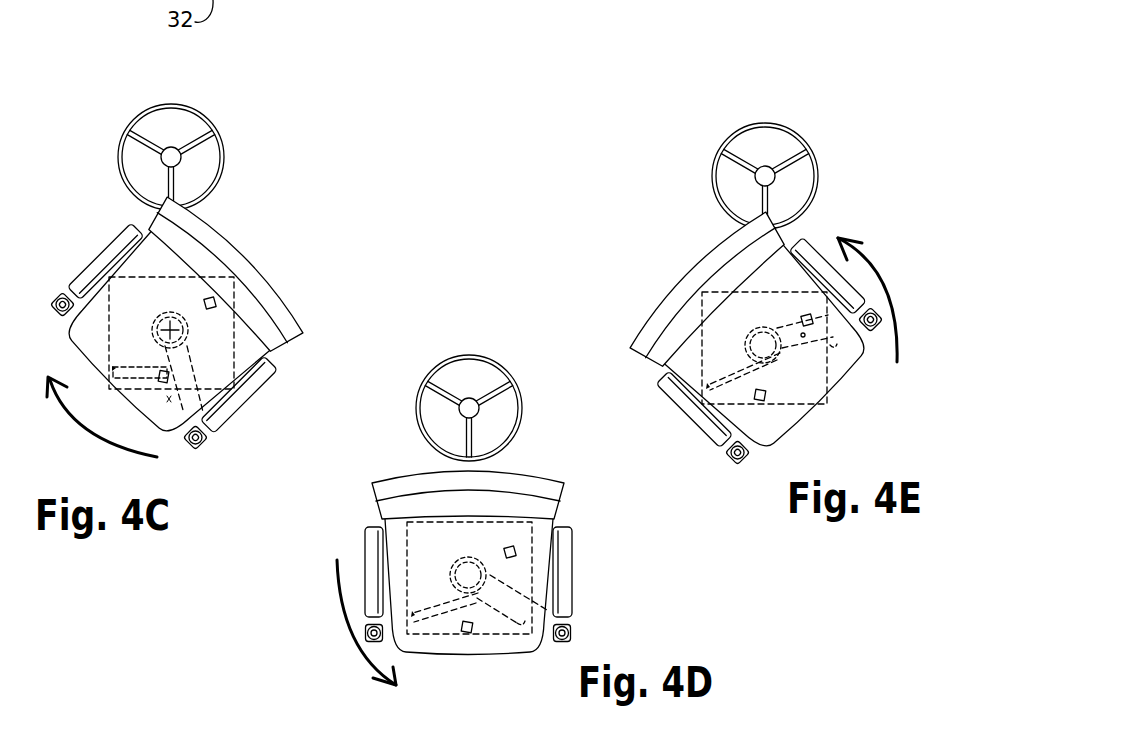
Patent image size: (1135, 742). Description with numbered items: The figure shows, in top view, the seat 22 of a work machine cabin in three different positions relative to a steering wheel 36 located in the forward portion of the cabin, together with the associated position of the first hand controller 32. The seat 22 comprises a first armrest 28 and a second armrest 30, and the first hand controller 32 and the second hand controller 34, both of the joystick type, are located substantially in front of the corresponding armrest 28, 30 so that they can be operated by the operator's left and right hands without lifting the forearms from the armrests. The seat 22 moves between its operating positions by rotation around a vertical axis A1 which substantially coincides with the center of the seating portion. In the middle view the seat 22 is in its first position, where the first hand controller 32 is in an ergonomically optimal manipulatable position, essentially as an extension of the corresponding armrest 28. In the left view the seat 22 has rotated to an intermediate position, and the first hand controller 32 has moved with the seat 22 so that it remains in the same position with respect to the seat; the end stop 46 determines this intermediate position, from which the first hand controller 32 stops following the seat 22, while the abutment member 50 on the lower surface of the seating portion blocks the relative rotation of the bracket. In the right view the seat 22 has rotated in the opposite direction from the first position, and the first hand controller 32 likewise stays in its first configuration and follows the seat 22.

In FIG. 4C, the seat 22 is at (266, 280).
In FIG. 4C, the first armrest 28 is at (250, 380).
In FIG. 4D, the first armrest 28 is at (565, 550).
In FIG. 4E, the first armrest 28 is at (812, 263).
In FIG. 4E, the second armrest 30 is at (708, 420).
In FIG. 4C, the first hand controller 32 is at (205, 439).
In FIG. 4D, the first hand controller 32 is at (573, 632).
In FIG. 4E, the first hand controller 32 is at (878, 315).
In FIG. 4E, the second hand controller 34 is at (731, 462).
In FIG. 4C, the steering wheel 36 is at (200, 107).
In FIG. 4D, the steering wheel 36 is at (470, 357).
In FIG. 4E, the steering wheel 36 is at (767, 124).
In FIG. 4C, the end stop 46 is at (142, 380).
In FIG. 4C, the abutment member 50 is at (173, 388).
In FIG. 4C, the vertical axis A1 is at (169, 329).